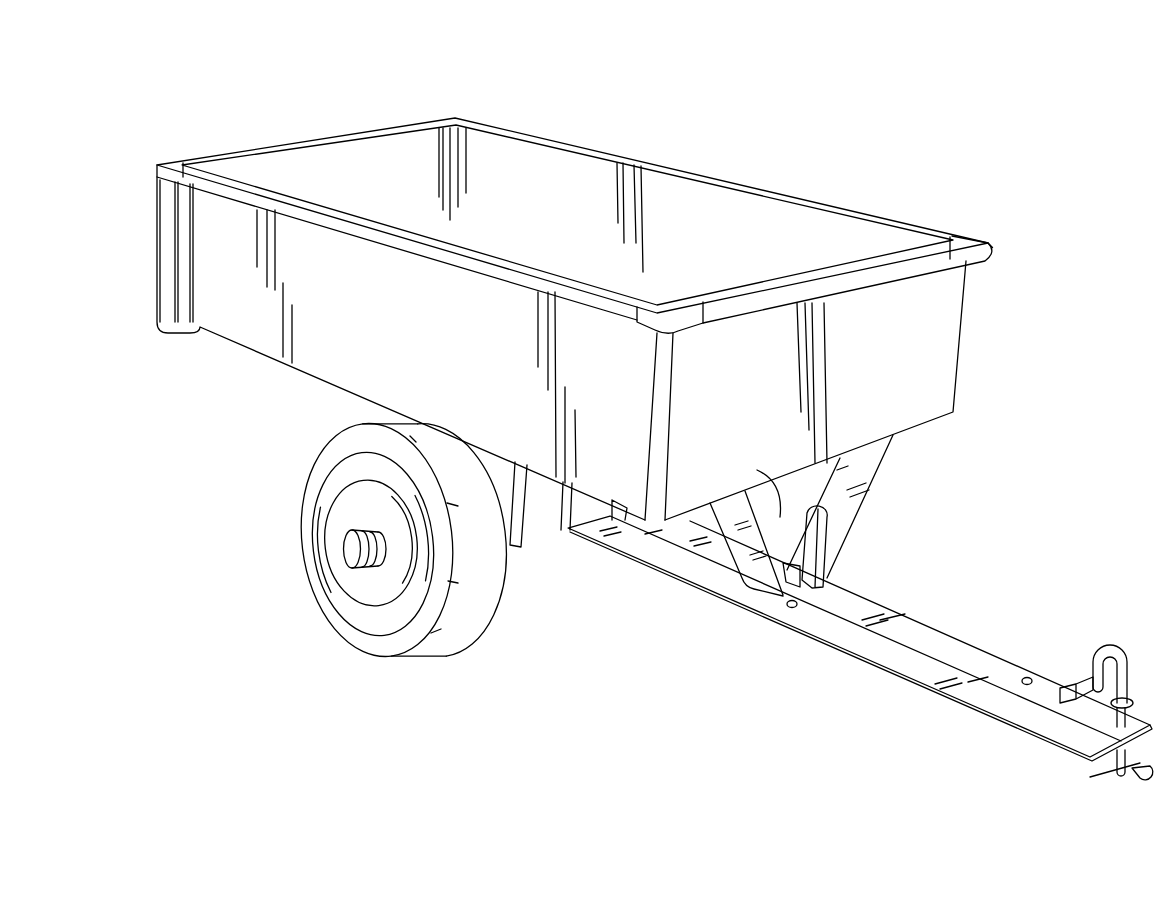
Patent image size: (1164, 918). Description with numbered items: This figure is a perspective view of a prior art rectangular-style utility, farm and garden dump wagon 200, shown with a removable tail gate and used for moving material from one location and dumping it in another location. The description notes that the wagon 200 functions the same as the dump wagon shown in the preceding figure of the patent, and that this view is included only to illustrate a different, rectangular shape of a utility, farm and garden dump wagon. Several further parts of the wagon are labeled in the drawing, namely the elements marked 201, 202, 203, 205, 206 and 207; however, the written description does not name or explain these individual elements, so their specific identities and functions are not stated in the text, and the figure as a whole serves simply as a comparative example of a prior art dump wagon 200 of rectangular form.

The rectangular utility, farm and garden wagon 200 is at (781, 99).
The bed 201 is at (333, 357).
The corner guard of bed rim 202 is at (975, 240).
The wheel 203 is at (370, 643).
The hitch pin / bracket 205 is at (818, 533).
The hub 206 is at (347, 548).
The tongue 207 is at (1042, 720).